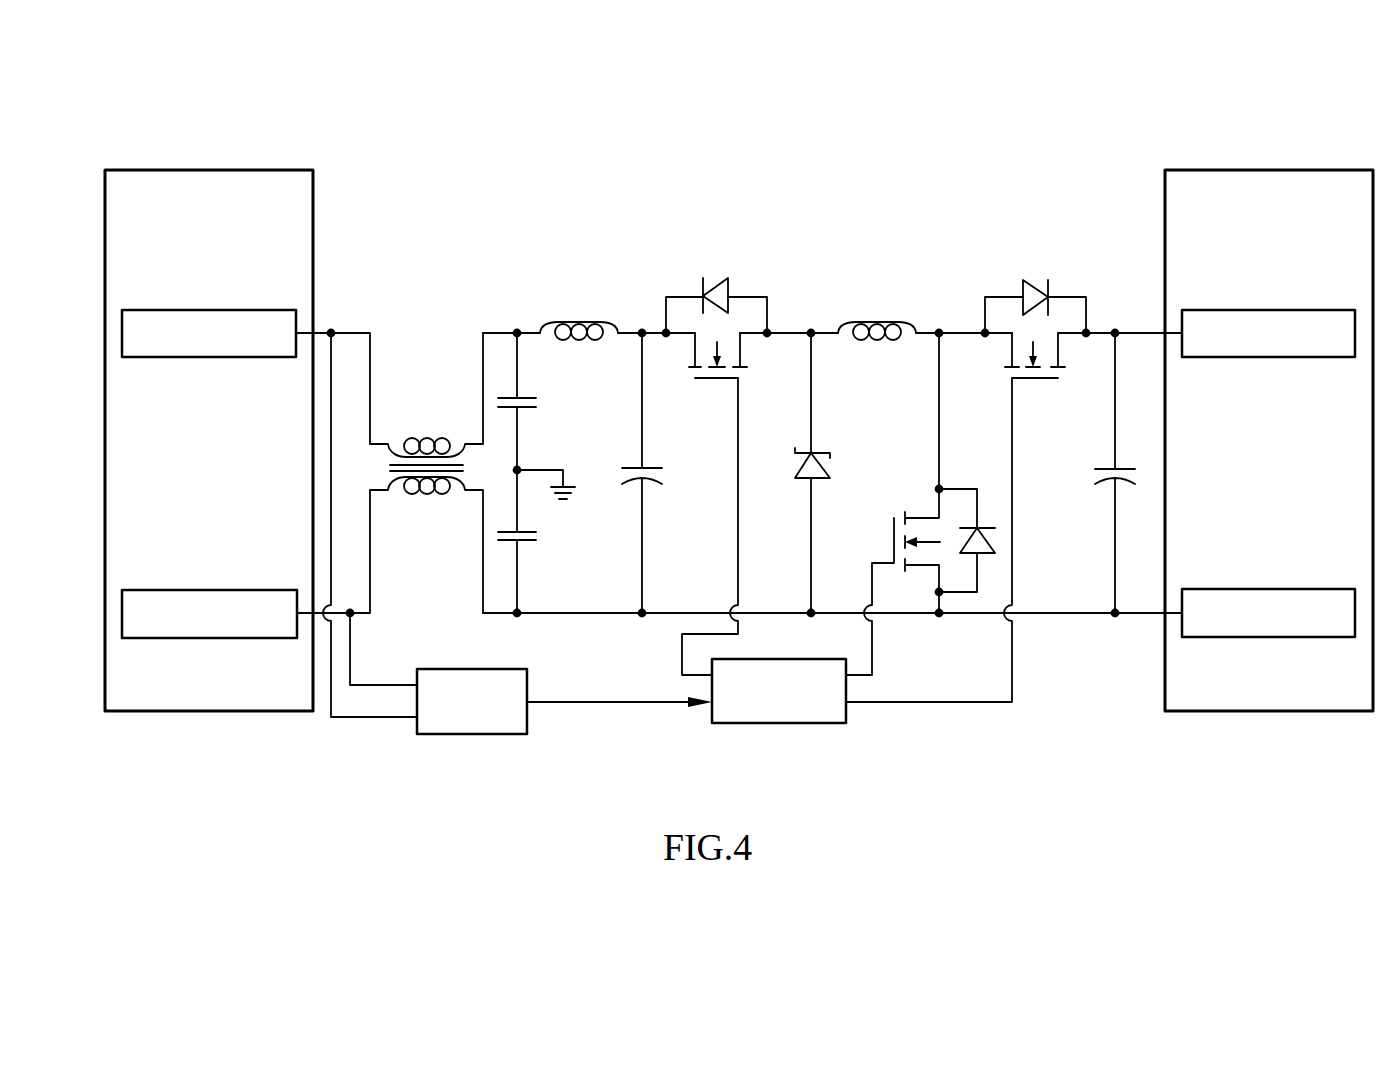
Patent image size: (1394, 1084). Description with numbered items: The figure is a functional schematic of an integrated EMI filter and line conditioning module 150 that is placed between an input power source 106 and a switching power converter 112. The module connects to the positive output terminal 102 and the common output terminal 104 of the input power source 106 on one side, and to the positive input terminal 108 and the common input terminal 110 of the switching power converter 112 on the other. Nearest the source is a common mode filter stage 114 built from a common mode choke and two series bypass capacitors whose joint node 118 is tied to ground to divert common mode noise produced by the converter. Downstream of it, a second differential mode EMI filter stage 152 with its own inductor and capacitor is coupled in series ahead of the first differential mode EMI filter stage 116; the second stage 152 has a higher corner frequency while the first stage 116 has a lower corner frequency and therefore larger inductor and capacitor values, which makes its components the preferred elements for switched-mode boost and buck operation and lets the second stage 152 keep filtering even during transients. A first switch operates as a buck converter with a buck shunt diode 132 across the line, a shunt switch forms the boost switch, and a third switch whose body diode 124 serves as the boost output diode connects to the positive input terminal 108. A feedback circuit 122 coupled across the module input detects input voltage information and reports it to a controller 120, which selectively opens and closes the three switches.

The EMI-LC module 150 is at (876, 75).
The input power source 106 is at (193, 170).
The positive output terminal 102 is at (190, 357).
The output terminal 104 is at (188, 638).
The switching power converter 112 is at (1253, 170).
The positive input terminal 108 is at (1282, 357).
The input terminal 110 is at (1282, 637).
The common mode filter stage 114 is at (436, 228).
The joint node 118 is at (520, 437).
The second differential mode EMI filter stage 152 is at (632, 228).
The first differential mode EMI filter stage 116 is at (956, 228).
The buck shunt diode 132 is at (826, 470).
The body diode 124 is at (1022, 285).
The feedback circuit 122 is at (480, 734).
The controller 120 is at (785, 723).